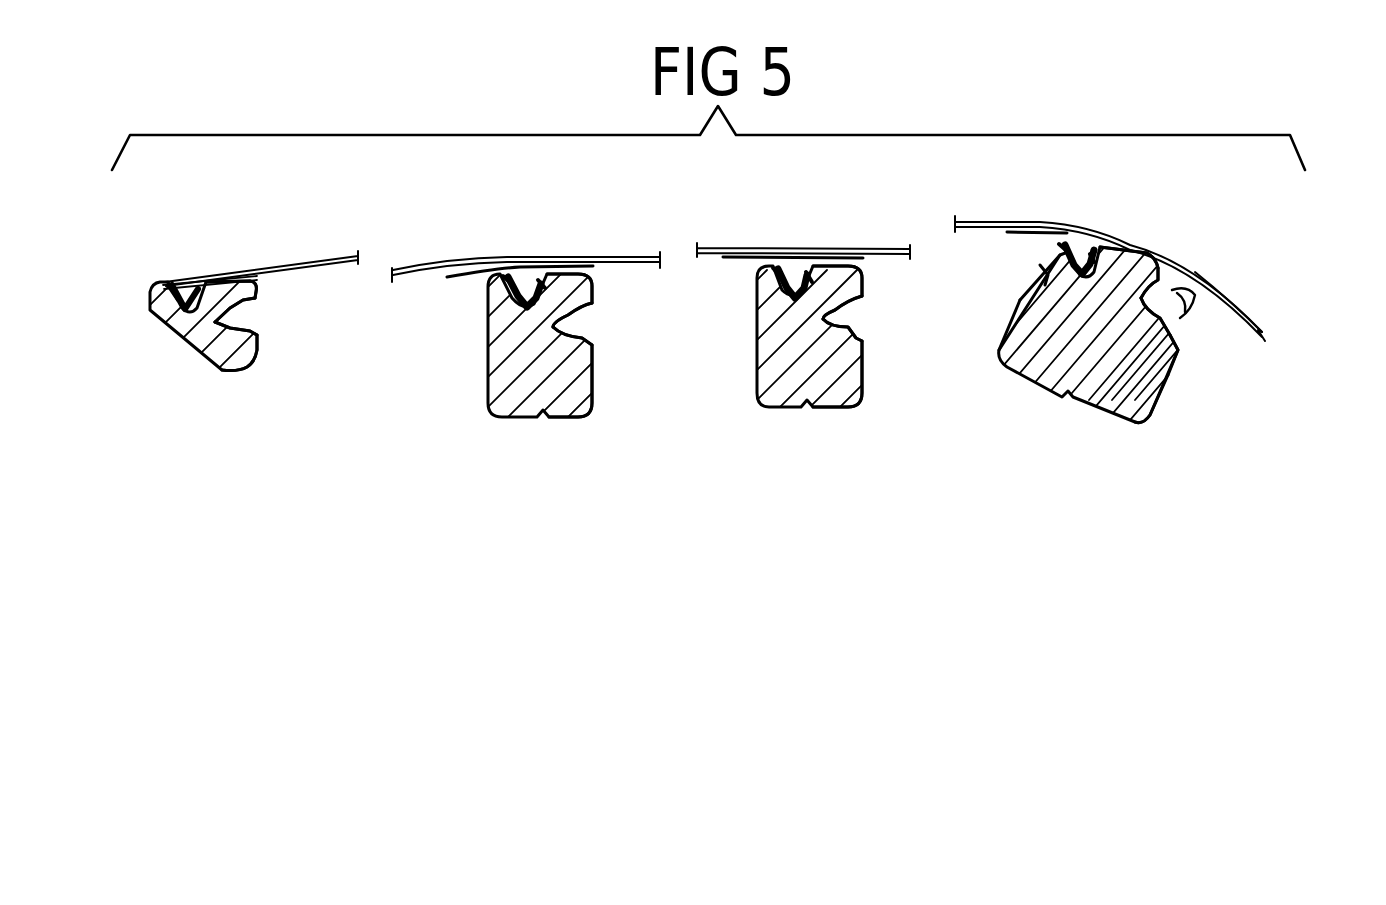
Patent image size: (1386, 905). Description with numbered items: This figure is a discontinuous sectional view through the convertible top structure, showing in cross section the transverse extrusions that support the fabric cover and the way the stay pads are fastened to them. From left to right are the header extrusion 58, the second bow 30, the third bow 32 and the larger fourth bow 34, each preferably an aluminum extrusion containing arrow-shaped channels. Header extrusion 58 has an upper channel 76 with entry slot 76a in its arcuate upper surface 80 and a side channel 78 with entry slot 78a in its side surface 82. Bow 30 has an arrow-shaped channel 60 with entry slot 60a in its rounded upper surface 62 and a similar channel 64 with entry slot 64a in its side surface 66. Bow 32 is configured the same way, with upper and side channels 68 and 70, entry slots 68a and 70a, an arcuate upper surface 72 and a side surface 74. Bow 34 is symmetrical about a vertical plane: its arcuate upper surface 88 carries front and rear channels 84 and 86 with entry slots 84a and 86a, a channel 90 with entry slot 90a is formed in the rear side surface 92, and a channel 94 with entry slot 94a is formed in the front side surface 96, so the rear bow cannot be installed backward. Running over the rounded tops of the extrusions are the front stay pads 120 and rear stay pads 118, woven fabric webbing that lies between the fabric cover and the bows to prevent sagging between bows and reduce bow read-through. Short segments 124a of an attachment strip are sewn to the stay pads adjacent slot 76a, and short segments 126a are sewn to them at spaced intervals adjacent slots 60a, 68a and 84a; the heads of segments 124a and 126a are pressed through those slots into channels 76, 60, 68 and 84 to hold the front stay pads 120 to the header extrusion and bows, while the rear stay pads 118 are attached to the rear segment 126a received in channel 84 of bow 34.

The #2 bow 30 is at (493, 413).
The #3 bow 32 is at (780, 407).
The #4 bow 34 is at (1053, 390).
The header extrusion 58 is at (187, 343).
The arrow-shaped channel 60 is at (525, 270).
The entry slot 60a is at (507, 270).
The upper surface 62 is at (573, 267).
The arrow-shaped channel 64 is at (583, 327).
The entry slot 64a is at (587, 347).
The bow side surface 66 is at (593, 397).
The upper channel 68 is at (793, 257).
The entry slot 68a is at (780, 263).
The side channel 70 is at (827, 317).
The entry slot 70a is at (857, 337).
The upper surface 72 is at (837, 250).
The side surface 74 is at (860, 397).
The upper channel 76 is at (192, 283).
The entry slot 76a is at (177, 287).
The side channel 78 is at (220, 322).
The entry slot 78a is at (250, 333).
The upper surface 80 is at (225, 280).
The side surface 82 is at (257, 363).
The front channel 84 is at (1080, 253).
The entry slot 84a is at (1077, 257).
The rear channel 86 is at (1189, 287).
The entry slot 86a is at (1189, 293).
The upper surface 88 is at (1158, 268).
The arrow-shaped channel 90 is at (1162, 330).
The entry slot 90a is at (1163, 352).
The rear side surface 92 is at (1153, 417).
The channel 94 is at (1060, 287).
The entry slot 94a is at (1043, 273).
The front side surface 96 is at (1000, 337).
The rear side stay pad 118 is at (1255, 322).
The front side stay pad 120 is at (392, 272).
The short segment of attachment strip 124a is at (205, 275).
The short segment of attachment strip 126a is at (540, 263).